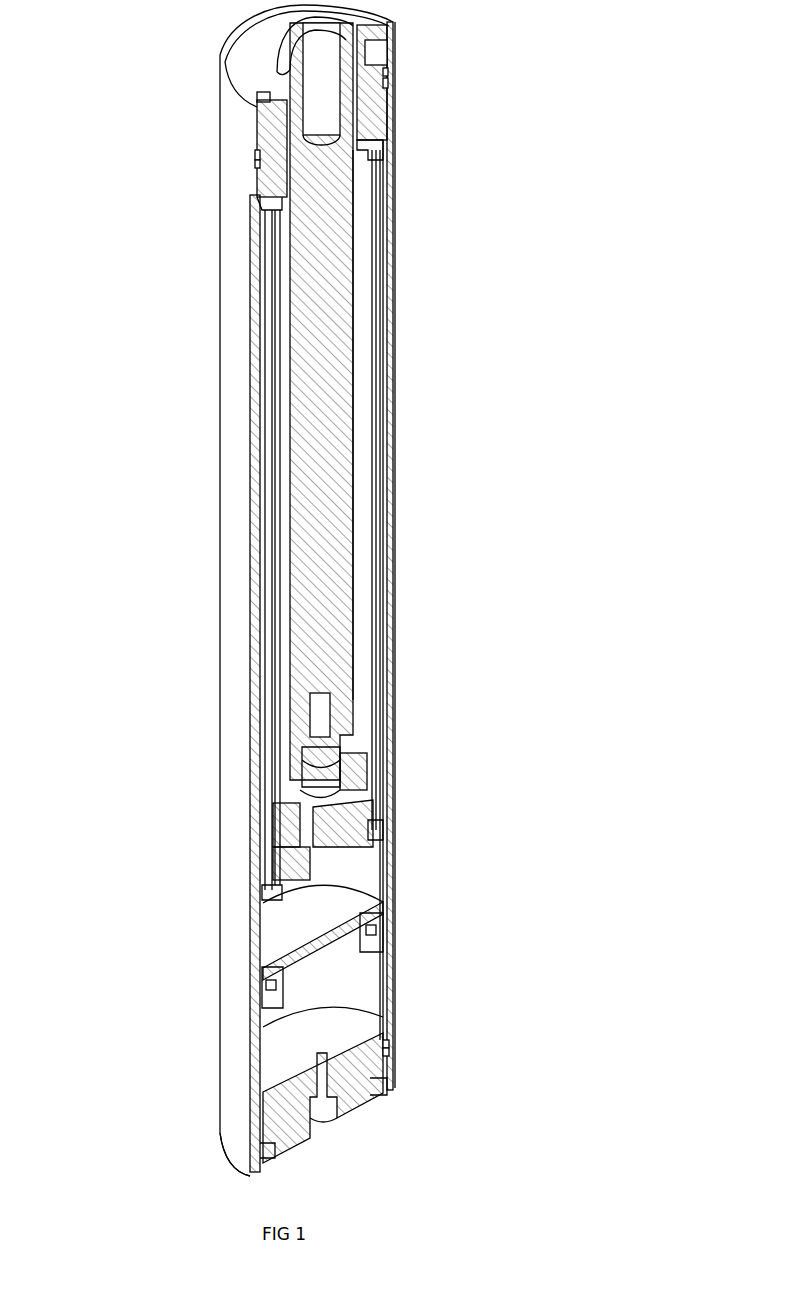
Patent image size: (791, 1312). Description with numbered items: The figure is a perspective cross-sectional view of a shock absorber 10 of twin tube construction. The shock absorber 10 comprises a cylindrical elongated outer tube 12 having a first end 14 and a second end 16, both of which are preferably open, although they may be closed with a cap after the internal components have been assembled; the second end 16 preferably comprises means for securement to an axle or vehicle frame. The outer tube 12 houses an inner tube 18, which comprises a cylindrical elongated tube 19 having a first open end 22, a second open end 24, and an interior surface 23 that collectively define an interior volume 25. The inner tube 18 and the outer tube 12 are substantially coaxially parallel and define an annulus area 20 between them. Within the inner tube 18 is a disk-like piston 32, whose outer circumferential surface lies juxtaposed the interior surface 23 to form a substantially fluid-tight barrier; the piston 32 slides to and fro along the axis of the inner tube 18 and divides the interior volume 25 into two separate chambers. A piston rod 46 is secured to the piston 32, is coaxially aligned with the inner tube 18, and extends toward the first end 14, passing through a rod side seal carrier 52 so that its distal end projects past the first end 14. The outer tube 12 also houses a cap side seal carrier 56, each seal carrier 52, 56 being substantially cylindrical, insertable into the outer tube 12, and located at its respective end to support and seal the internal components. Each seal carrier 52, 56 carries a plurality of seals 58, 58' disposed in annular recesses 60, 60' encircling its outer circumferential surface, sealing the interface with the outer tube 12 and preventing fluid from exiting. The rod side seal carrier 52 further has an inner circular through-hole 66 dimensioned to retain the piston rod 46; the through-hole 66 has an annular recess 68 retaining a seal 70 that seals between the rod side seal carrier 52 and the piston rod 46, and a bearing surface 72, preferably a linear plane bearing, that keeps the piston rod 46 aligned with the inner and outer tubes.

The shock absorber 10 is at (180, 713).
The outer tube 12 is at (250, 513).
The first end 14 is at (228, 105).
The second end 16 is at (240, 1138).
The inner tube 18 is at (272, 566).
The cylindrical elongated tube 19 is at (363, 415).
The annulus area 20 is at (380, 465).
The first open end 22 is at (268, 228).
The interior surface 23 is at (367, 248).
The second open end 24 is at (377, 1013).
The interior volume 25 is at (366, 876).
The piston 32 is at (383, 780).
The piston rod 46 is at (307, 317).
The rod side seal carrier 52 is at (366, 122).
The cap side seal carrier 56 is at (352, 1103).
The seal 58 is at (427, 77).
The seal 58' is at (222, 159).
The annular recess 60 is at (435, 55).
The annular recess 60' is at (220, 176).
The inner circular through-hole 66 is at (377, 84).
The annular recess 68 is at (260, 112).
The seal 70 is at (366, 36).
The bearing surface 72 is at (278, 188).